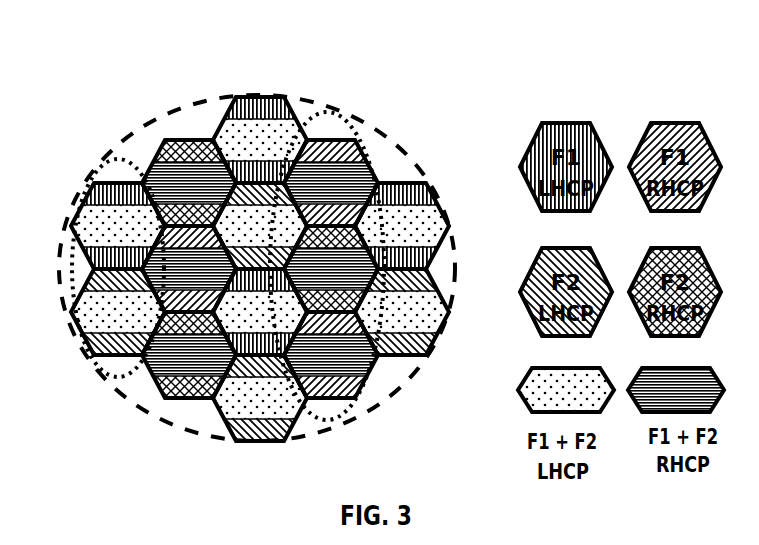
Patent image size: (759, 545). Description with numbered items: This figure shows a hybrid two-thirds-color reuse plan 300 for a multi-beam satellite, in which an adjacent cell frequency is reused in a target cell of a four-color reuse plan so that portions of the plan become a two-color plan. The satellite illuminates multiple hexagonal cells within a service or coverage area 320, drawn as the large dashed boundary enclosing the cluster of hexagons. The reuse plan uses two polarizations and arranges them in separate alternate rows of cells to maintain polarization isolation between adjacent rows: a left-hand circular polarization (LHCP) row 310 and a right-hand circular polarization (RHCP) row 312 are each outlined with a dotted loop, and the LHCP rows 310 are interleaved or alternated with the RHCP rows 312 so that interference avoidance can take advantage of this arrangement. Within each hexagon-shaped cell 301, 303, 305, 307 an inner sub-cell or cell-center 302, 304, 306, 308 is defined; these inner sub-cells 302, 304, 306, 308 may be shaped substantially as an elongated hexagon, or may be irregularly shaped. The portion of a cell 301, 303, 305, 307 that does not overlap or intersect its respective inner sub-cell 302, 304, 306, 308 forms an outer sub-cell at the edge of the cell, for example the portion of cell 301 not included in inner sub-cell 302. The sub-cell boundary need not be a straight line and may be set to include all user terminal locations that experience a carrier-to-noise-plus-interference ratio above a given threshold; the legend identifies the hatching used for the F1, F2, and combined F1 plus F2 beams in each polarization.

The hybrid ⅔-color reuse plan 300 is at (349, 51).
The hexagon-shaped cell 301 is at (191, 142).
The inner sub-cell 302 is at (169, 178).
The hexagon-shaped cell 303 is at (252, 98).
The inner sub-cell 304 is at (248, 138).
The hexagon-shaped cell 305 is at (160, 235).
The inner sub-cell 306 is at (132, 243).
The hexagon-shaped cell 307 is at (292, 192).
The inner sub-cell 308 is at (292, 245).
The left-hand circular polarization (LHCP) row 310 is at (118, 159).
The right-hand circular polarization (RHCP) row 312 is at (327, 112).
The coverage area 320 is at (393, 142).